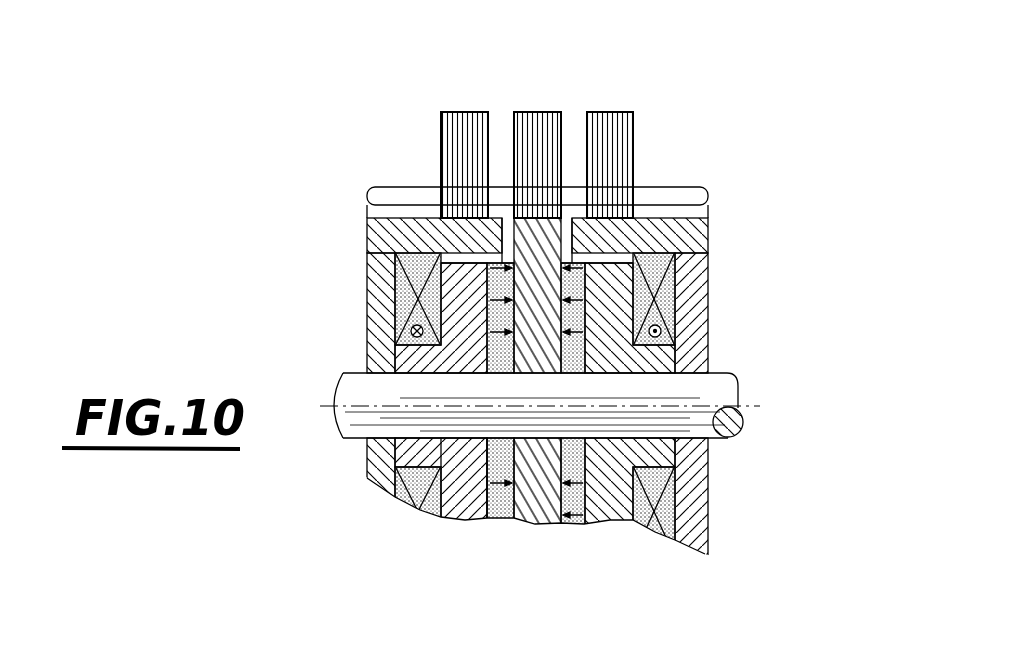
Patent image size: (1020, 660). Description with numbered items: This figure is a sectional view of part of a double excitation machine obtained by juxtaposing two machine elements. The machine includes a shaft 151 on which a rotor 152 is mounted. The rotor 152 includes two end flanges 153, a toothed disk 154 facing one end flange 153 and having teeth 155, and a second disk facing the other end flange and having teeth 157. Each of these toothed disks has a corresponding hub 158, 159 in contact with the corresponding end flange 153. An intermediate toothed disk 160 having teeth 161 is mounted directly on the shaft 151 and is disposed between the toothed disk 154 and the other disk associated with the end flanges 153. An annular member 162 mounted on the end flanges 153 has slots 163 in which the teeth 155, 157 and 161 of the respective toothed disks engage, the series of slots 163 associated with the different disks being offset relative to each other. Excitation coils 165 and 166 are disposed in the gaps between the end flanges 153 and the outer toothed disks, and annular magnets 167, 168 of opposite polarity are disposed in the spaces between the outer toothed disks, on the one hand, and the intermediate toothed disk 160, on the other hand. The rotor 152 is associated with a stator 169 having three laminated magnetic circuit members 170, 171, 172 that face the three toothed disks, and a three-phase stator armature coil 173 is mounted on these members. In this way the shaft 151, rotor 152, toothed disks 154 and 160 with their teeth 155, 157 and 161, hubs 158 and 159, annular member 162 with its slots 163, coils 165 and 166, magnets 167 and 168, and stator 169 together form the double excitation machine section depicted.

The shaft 151 is at (340, 420).
The rotor 152 is at (715, 300).
The end flanges 153 is at (378, 320).
The toothed disk 154 is at (462, 500).
The teeth 155 is at (385, 230).
The teeth 157 is at (610, 262).
The hub 158 is at (415, 457).
The hub 159 is at (655, 455).
The intermediate toothed disk 160 is at (531, 500).
The teeth 161 is at (568, 235).
The annular member 162 is at (683, 238).
The slots 163 is at (500, 235).
The excitation coil 165 is at (425, 497).
The excitation coil 166 is at (648, 507).
The annular magnet 167 is at (495, 500).
The annular magnet 168 is at (573, 505).
The stator 169 is at (587, 125).
The laminated magnetic circuit member 170 is at (461, 128).
The laminated magnetic circuit member 171 is at (615, 128).
The laminated magnetic circuit member 172 is at (538, 130).
The three-phase stator armature coil 173 is at (405, 195).